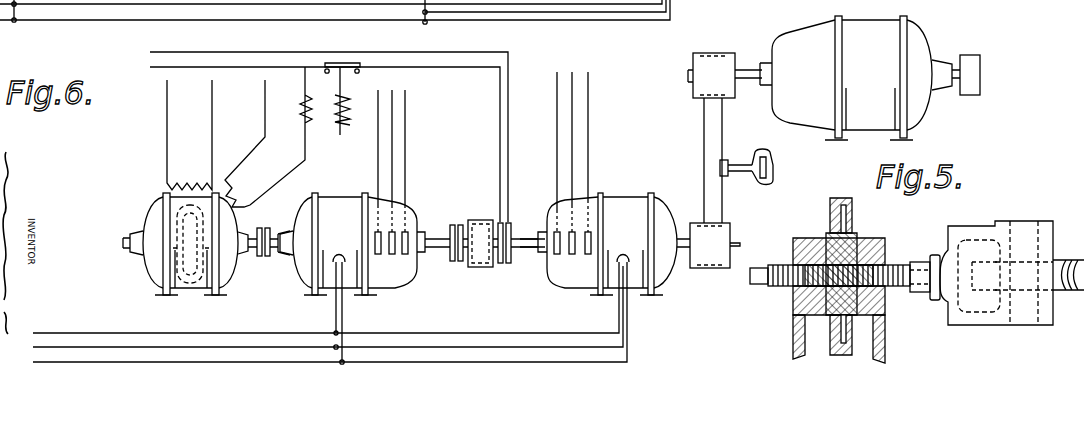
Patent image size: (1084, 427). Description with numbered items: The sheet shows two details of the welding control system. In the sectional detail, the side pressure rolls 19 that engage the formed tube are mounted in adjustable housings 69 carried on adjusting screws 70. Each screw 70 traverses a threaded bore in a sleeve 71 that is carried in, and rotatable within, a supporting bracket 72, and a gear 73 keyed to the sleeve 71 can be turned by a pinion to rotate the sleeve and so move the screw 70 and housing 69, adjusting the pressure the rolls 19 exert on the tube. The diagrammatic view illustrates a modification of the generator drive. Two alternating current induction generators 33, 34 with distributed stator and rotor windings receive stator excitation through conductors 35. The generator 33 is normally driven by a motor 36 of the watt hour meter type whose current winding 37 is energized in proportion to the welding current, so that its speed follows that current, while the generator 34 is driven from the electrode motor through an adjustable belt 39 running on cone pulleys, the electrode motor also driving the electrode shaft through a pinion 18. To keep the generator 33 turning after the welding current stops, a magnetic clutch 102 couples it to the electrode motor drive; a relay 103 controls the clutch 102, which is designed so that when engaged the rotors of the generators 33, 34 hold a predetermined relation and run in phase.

In FIG. 6, the pinion 18 is at (858, 28).
In FIG. 5, the side pressure rolls 19 is at (1062, 260).
In FIG. 6, the generator 33 is at (332, 204).
In FIG. 6, the generator 34 is at (617, 205).
In FIG. 6, the conductors 35 is at (150, 212).
In FIG. 6, the motor 36 is at (190, 172).
In FIG. 6, the current winding 37 is at (250, 196).
In FIG. 6, the adjustable belt 39 is at (714, 136).
In FIG. 5, the adjustable housings 69 is at (962, 233).
In FIG. 5, the adjusting screws 70 is at (898, 263).
In FIG. 5, the sleeve 71 is at (793, 292).
In FIG. 5, the supporting brackets 72 is at (793, 336).
In FIG. 5, the gear 73 is at (852, 217).
In FIG. 6, the magnetic clutch 102 is at (483, 224).
In FIG. 6, the relay 103 is at (344, 102).